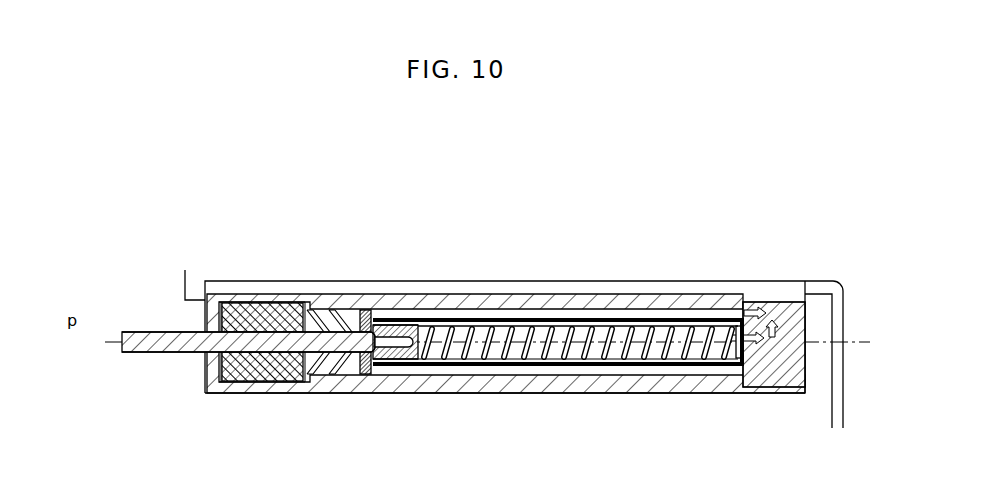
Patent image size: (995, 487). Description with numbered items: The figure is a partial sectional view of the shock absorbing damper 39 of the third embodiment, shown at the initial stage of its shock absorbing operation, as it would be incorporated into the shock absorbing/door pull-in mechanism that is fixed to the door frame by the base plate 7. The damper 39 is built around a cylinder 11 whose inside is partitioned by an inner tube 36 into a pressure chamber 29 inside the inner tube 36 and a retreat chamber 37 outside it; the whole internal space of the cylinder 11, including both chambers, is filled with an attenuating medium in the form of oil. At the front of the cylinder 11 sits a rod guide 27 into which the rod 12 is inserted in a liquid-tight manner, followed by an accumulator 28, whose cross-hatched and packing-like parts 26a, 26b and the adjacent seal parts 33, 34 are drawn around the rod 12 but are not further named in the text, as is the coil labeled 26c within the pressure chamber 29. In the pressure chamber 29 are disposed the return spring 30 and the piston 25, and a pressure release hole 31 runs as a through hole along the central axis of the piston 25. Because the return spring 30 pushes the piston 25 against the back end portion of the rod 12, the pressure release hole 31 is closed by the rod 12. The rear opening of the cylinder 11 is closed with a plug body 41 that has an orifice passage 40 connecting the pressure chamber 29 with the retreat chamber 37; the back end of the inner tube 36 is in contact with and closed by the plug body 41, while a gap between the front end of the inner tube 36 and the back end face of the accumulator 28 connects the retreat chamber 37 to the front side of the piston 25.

The base plate 7 is at (700, 288).
The cylinder 11 is at (610, 310).
The rod 12 is at (138, 332).
The piston 25 is at (398, 320).
The elastic member 26a is at (250, 377).
The seal packing 26b is at (345, 377).
The coil spring 26c is at (499, 358).
The rod guide 27 is at (240, 308).
The accumulator 28 is at (320, 308).
The pressure chamber 29 is at (477, 327).
The return spring 30 is at (547, 330).
The pressure release hole 31 is at (400, 362).
The seal 33 is at (370, 312).
The retainer 34 is at (332, 310).
The inner tube 36 is at (522, 320).
The retreat chamber 37 is at (642, 368).
The shock absorbing damper 39 is at (665, 198).
The orifice passage 40 is at (752, 300).
The plug body 41 is at (783, 300).